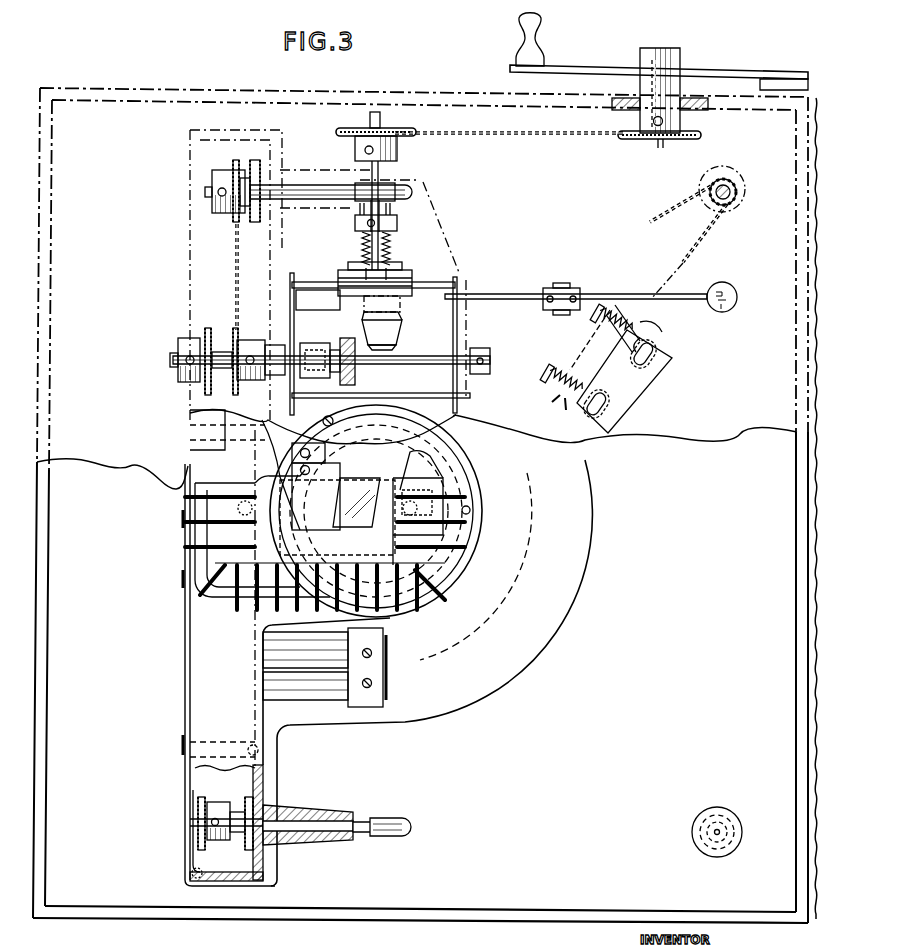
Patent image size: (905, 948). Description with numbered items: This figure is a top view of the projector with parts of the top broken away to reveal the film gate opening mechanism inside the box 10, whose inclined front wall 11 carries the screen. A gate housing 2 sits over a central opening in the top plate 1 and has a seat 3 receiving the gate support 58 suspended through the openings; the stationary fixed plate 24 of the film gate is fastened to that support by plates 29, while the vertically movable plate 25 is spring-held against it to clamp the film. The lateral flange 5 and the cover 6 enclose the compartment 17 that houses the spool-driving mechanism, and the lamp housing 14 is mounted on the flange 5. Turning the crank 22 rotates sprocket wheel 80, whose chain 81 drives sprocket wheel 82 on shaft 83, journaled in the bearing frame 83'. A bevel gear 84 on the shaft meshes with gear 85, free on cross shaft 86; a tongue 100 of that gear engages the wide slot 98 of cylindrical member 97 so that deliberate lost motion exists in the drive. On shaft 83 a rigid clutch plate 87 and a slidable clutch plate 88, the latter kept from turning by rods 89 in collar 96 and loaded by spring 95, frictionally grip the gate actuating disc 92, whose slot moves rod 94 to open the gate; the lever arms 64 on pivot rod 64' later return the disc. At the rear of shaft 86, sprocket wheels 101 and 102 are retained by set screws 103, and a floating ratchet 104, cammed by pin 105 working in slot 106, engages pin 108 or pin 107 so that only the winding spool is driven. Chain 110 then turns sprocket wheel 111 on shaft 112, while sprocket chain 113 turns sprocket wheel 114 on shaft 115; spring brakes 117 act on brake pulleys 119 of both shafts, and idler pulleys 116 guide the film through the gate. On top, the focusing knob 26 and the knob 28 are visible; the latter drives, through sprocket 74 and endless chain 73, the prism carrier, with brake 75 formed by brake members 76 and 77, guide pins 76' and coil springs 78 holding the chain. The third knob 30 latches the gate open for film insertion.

The top plate 1 is at (506, 890).
The gate housing 2 is at (548, 612).
The seat 3 is at (470, 482).
The lateral flange 5 is at (215, 642).
The cover 6 is at (185, 627).
The box 10 is at (132, 917).
The front wall 11 is at (812, 630).
The lamp housing 14 is at (215, 530).
The compartment 17 is at (238, 783).
The crank 22 is at (592, 70).
The stationary fixed plate 24 is at (360, 480).
The vertically movable plate 25 is at (396, 470).
The focusing knob 26 is at (728, 828).
The knob 28 is at (746, 186).
The plates 29 is at (322, 463).
The third knob 30 is at (738, 298).
The gate support 58 is at (465, 492).
The lever arms 64 is at (397, 345).
The pivot rod 64' is at (381, 383).
The endless chain 73 is at (692, 250).
The sprocket 74 is at (733, 203).
The brake 75 is at (645, 375).
The brake member 76 is at (576, 303).
The guide pins 76' is at (586, 342).
The brake member 77 is at (652, 330).
The coil springs 78 is at (612, 318).
The sprocket wheel 80 is at (674, 142).
The chain 81 is at (558, 136).
The sprocket wheel 82 is at (395, 128).
The shaft 83 is at (399, 210).
The bearing frame 83' is at (444, 287).
The bevel gear 84 is at (390, 330).
The gear 85 is at (347, 346).
The cross shaft 86 is at (425, 360).
The clutch plate 87 is at (336, 300).
The clutch plate 88 is at (402, 275).
The rods 89 is at (387, 208).
The gate actuating disc 92 is at (345, 283).
The rod 94 is at (297, 282).
The spring 95 is at (396, 256).
The collar 96 is at (398, 222).
The cylindrical member 97 is at (300, 350).
The slot 98 is at (338, 420).
The tongue 100 is at (318, 350).
The sprocket wheel 101 is at (251, 340).
The sprocket wheel 102 is at (188, 340).
The set screws 103 is at (188, 372).
The floating ratchet 104 is at (225, 345).
The pin 105 is at (215, 330).
The slot 106 is at (226, 382).
The pin 107 is at (214, 413).
The pin 108 is at (234, 330).
The chain 110 is at (240, 280).
The sprocket wheel 111 is at (226, 175).
The shaft 112 is at (310, 190).
The sprocket chain 113 is at (197, 787).
The sprocket wheel 114 is at (228, 852).
The shaft 115 is at (345, 820).
The idler pulleys 116 is at (372, 706).
The spring brakes 117 is at (258, 160).
The brake pulleys 119 is at (240, 160).